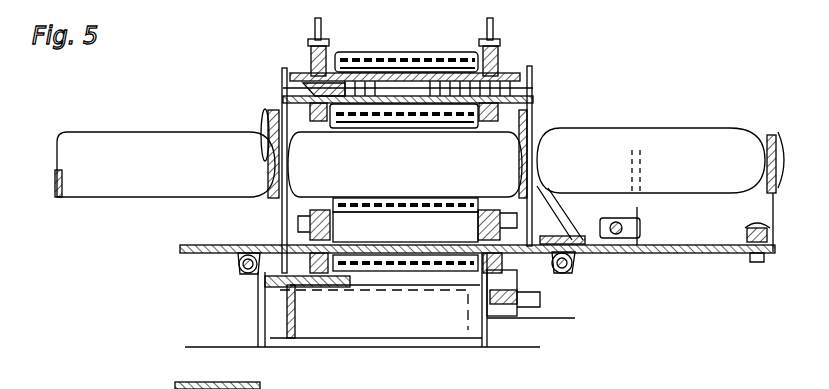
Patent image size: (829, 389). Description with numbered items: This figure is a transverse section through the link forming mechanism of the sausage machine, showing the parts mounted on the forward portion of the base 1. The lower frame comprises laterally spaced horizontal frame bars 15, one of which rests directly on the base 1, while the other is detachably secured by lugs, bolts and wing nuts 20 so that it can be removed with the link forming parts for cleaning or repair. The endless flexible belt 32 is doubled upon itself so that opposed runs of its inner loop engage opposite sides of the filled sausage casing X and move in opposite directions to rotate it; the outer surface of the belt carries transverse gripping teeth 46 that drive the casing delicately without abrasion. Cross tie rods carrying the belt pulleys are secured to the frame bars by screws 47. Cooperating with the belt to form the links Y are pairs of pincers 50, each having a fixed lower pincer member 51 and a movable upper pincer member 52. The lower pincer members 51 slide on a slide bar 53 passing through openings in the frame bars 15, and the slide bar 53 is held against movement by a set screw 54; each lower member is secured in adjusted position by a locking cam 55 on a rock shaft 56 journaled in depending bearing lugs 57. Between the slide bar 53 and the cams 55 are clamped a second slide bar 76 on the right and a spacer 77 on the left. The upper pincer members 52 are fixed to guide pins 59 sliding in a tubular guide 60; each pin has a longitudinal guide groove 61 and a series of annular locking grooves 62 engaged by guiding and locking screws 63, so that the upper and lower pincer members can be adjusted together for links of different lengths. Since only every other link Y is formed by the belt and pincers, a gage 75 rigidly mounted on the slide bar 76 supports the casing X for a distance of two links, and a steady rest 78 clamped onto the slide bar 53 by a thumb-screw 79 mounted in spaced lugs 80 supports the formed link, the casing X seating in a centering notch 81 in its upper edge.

The base 1 is at (263, 329).
The frame bar 15 is at (322, 290).
The wing nut 20 is at (540, 298).
The endless flexible belt 32 is at (405, 108).
The gripping teeth 46 is at (408, 272).
The screw 47 is at (310, 224).
The pincers 50 is at (270, 222).
The lower pincer member 51 is at (268, 208).
The upper pincer member 52 is at (290, 76).
The slide bar 53 is at (190, 252).
The set screw 54 is at (490, 226).
The locking cam 55 is at (242, 272).
The rock shaft 56 is at (243, 275).
The bearing lug 57 is at (578, 258).
The guide pin 59 is at (285, 70).
The tubular guide 60 is at (368, 78).
The longitudinal guide groove 61 is at (268, 124).
The annular locking groove 62 is at (531, 82).
The guiding and locking screw 63 is at (320, 20).
The gage 75 is at (768, 220).
The slide bar 76 is at (702, 255).
The spacer 77 is at (215, 258).
The steady rest 78 is at (637, 222).
The thumb-screw 79 is at (622, 195).
The lug 80 is at (616, 195).
The centering notch 81 is at (640, 195).
The filled sausage casing X is at (165, 164).
The link Y is at (553, 163).